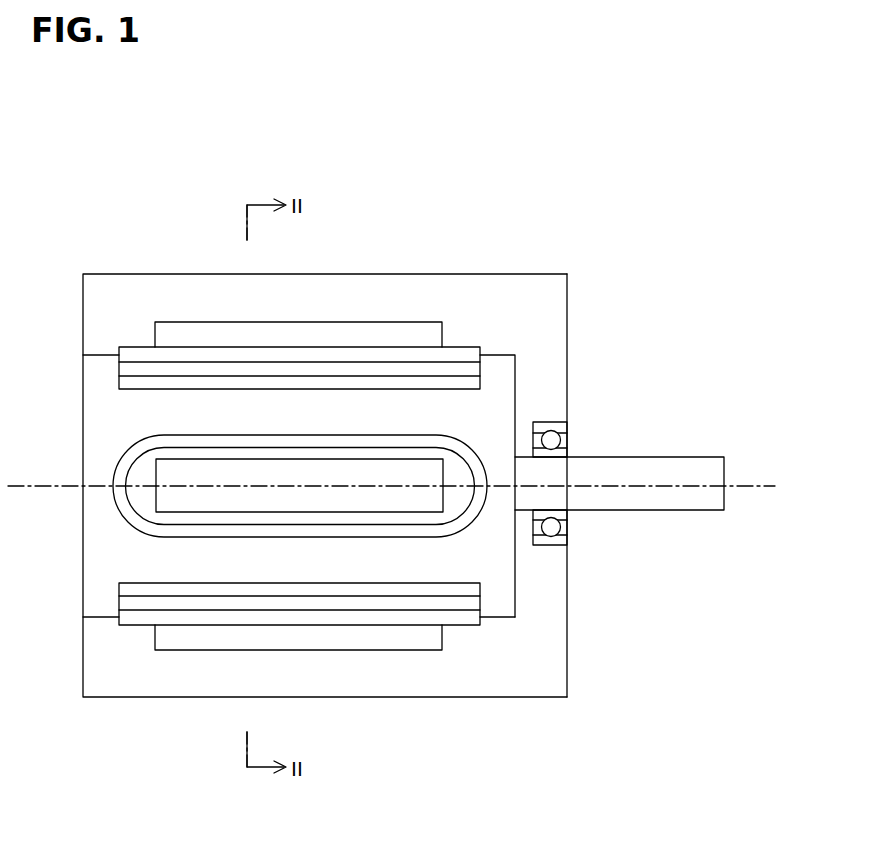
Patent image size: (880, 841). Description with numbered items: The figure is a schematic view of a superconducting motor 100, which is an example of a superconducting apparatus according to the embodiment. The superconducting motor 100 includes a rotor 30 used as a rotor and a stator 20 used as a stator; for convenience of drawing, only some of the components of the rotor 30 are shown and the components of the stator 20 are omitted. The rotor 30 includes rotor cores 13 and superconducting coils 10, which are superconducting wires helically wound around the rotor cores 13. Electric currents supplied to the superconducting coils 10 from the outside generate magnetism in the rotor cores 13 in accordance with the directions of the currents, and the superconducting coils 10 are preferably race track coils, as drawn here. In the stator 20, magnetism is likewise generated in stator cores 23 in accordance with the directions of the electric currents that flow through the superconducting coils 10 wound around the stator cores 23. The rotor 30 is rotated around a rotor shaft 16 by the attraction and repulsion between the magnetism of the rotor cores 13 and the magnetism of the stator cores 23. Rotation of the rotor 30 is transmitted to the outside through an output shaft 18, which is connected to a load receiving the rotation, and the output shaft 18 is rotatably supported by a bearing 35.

The superconducting motor 100 is at (612, 182).
The superconducting coils 10 is at (460, 353).
The rotor cores 13 is at (183, 497).
The rotor shaft 16 is at (499, 600).
The output shaft 18 is at (673, 470).
The stator 20 is at (540, 338).
The stator cores 23 is at (537, 292).
The rotor 30 is at (498, 575).
The bearing 35 is at (550, 421).